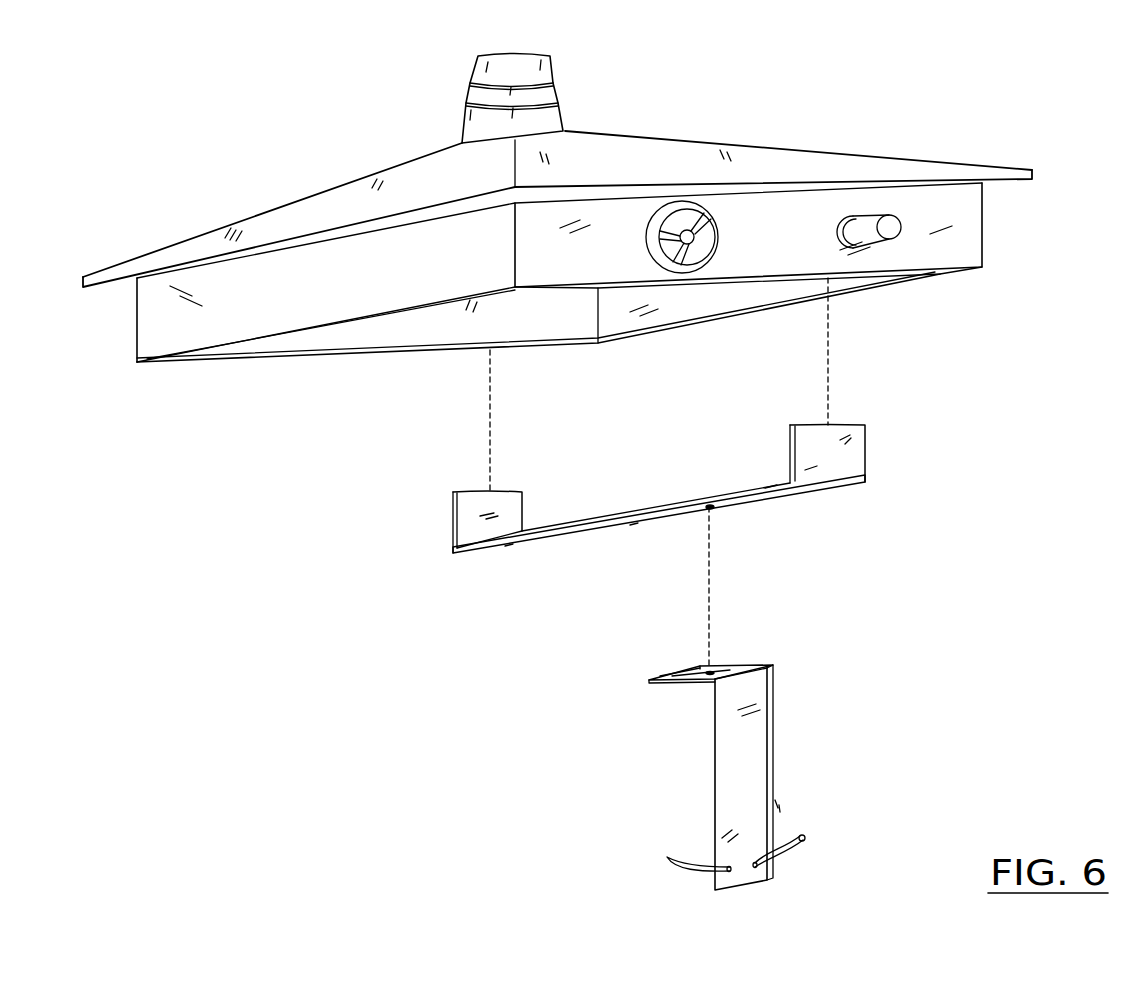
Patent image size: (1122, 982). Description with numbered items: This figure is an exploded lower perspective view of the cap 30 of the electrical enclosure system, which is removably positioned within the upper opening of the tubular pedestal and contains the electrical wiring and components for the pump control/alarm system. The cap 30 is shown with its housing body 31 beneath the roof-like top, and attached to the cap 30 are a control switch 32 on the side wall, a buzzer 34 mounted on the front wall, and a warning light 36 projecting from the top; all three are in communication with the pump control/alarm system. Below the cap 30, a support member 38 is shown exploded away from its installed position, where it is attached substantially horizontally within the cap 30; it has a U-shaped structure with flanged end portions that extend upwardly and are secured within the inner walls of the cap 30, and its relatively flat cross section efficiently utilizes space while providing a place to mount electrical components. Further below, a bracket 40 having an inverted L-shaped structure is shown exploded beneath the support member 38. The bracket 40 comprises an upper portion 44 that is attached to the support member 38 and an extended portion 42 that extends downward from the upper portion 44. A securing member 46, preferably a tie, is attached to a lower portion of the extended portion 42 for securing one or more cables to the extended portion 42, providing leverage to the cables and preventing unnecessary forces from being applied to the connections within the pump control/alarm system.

The cap 30 is at (758, 147).
The hood body 31 is at (220, 330).
The control switch 32 is at (891, 226).
The buzzer 34 is at (680, 223).
The warning light 36 is at (550, 68).
The support member 38 is at (568, 535).
The bracket 40 is at (715, 777).
The extended portion 42 is at (762, 746).
The upper portion 44 is at (683, 680).
The securing member 46 is at (771, 846).